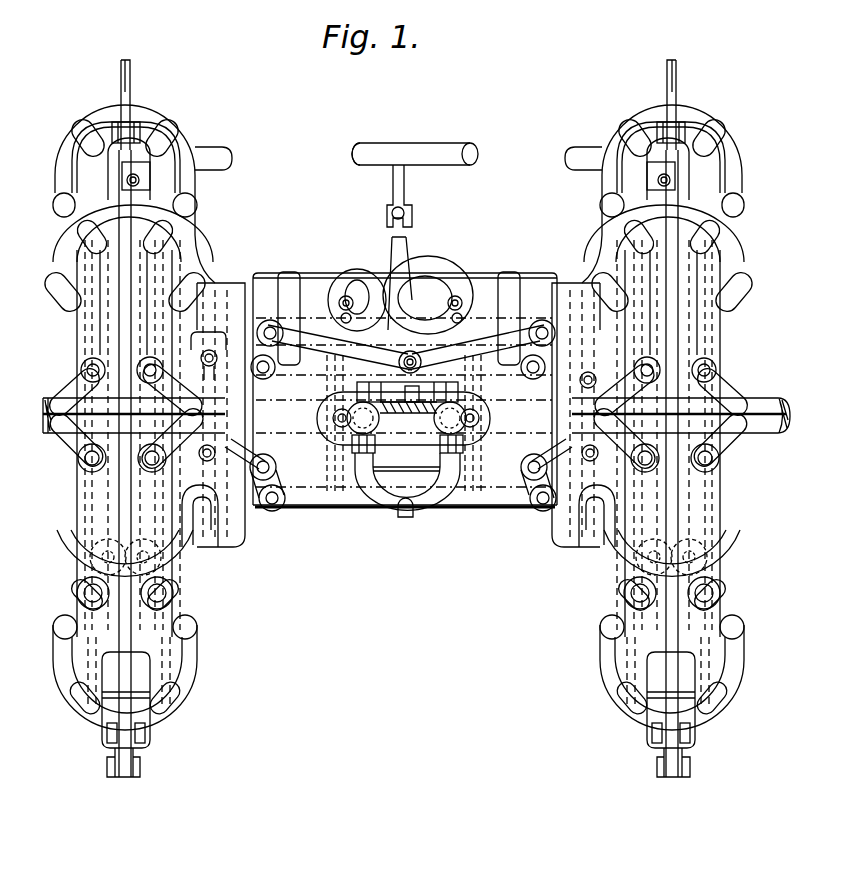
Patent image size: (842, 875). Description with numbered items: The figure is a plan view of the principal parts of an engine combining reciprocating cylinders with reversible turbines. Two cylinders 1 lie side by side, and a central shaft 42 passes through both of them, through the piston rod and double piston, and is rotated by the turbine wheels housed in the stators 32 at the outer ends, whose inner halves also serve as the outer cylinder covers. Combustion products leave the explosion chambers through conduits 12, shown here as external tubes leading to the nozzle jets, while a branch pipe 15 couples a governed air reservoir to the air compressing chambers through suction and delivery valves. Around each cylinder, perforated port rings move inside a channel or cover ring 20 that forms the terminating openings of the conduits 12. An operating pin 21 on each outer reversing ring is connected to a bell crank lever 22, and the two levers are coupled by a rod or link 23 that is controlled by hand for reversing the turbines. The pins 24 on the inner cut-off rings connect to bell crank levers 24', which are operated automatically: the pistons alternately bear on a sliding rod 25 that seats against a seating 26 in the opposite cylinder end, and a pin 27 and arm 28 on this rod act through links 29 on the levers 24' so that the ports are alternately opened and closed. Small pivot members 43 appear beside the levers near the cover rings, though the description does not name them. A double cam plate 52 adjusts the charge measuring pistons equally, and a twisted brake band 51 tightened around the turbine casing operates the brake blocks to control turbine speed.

The cylinder 1 is at (302, 477).
The conduit 12 is at (200, 671).
The branch pipe 15 is at (408, 520).
The channel or cover ring 20 is at (242, 537).
The operating pin 21 is at (232, 443).
The bell crank lever 22 is at (282, 480).
The rod or link 23 is at (340, 500).
The pin 24 is at (401, 294).
The bell crank lever 24' is at (399, 393).
The sliding rod 25 is at (430, 400).
The seating 26 is at (357, 384).
The pin 27 is at (405, 348).
The arm 28 is at (427, 357).
The link 29 is at (293, 330).
The stator 32 is at (645, 652).
The central shaft 42 is at (768, 412).
The ring 43 is at (218, 343).
The twisted brake band 51 is at (127, 493).
The double cam plate 52 is at (440, 330).